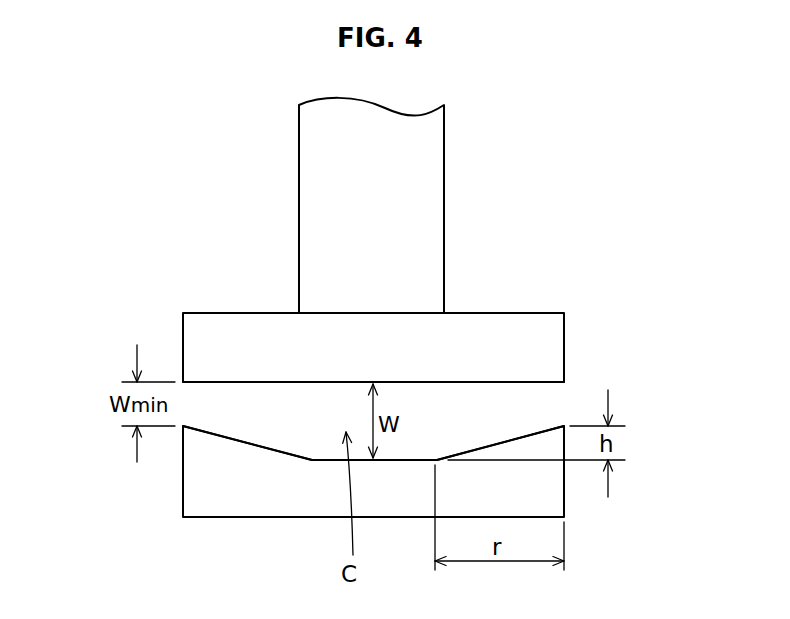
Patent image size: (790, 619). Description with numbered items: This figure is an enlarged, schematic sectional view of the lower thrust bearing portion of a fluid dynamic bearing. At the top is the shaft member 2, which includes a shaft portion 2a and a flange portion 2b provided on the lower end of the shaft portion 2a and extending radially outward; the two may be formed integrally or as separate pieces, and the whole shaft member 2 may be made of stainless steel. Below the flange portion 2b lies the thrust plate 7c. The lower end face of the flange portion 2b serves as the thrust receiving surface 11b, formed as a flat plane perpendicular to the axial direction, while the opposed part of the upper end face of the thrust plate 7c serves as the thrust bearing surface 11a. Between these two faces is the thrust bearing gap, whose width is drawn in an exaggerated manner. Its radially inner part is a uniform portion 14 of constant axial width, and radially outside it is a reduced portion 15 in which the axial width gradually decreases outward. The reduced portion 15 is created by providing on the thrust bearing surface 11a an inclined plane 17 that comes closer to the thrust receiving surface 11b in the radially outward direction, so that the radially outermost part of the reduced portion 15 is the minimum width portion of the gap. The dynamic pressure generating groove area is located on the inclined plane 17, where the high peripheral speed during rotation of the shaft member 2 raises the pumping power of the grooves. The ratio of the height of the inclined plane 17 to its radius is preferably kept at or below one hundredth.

The shaft member 2 is at (265, 202).
The shaft portion 2a is at (425, 184).
The flange portion 2b is at (547, 342).
The thrust plate 7c is at (298, 508).
The thrust bearing surface 11a is at (230, 425).
The thrust receiving surface 11b is at (215, 395).
The uniform portion 14 is at (404, 403).
The reduced portion 15 is at (502, 403).
The inclined plane 17 is at (482, 447).